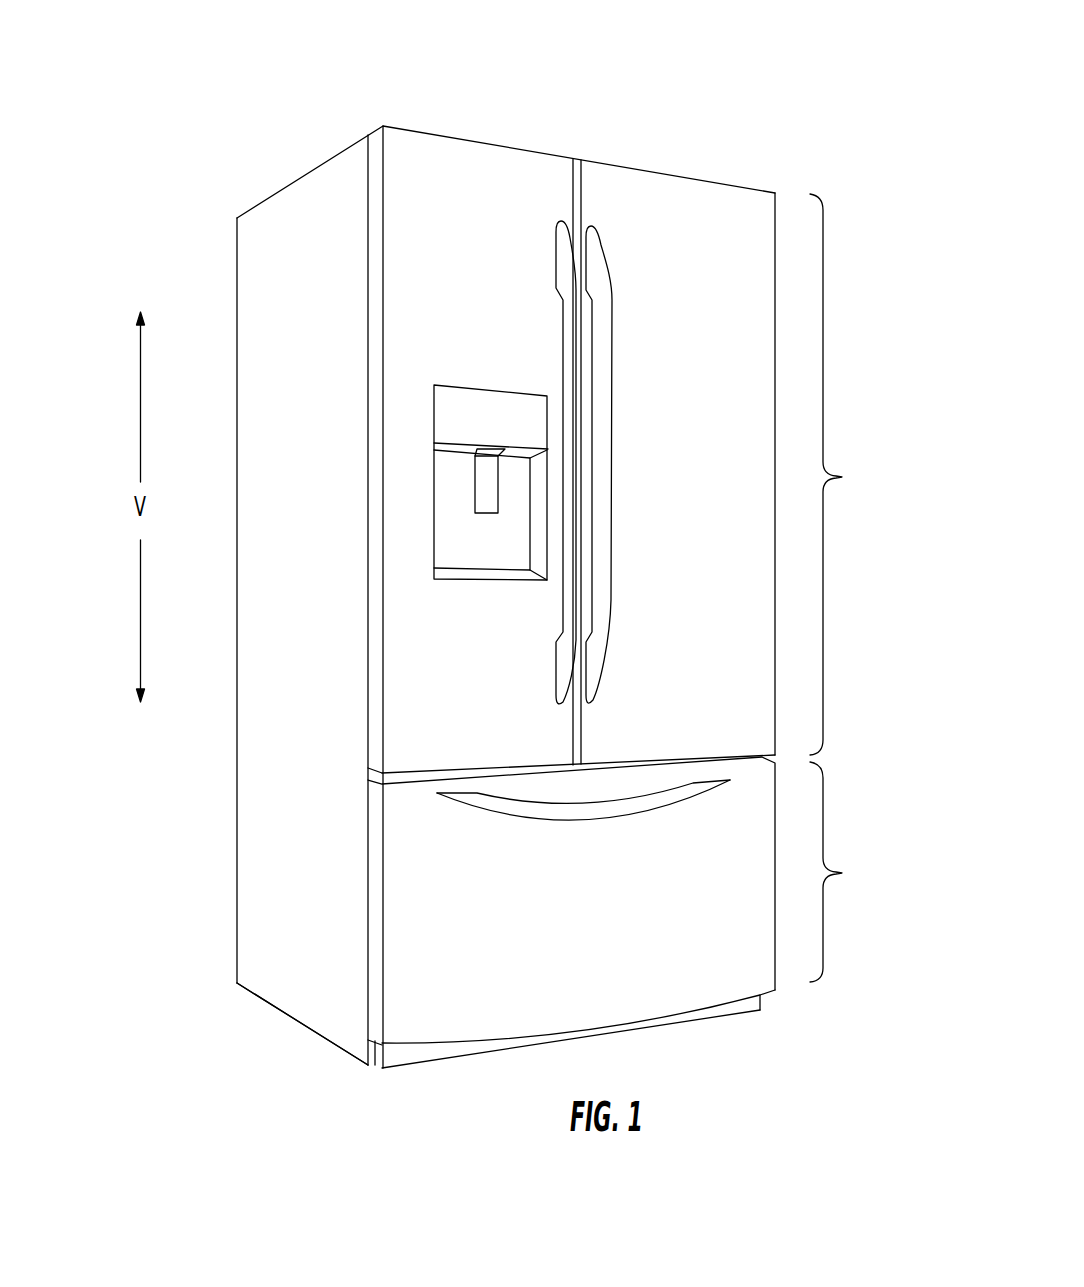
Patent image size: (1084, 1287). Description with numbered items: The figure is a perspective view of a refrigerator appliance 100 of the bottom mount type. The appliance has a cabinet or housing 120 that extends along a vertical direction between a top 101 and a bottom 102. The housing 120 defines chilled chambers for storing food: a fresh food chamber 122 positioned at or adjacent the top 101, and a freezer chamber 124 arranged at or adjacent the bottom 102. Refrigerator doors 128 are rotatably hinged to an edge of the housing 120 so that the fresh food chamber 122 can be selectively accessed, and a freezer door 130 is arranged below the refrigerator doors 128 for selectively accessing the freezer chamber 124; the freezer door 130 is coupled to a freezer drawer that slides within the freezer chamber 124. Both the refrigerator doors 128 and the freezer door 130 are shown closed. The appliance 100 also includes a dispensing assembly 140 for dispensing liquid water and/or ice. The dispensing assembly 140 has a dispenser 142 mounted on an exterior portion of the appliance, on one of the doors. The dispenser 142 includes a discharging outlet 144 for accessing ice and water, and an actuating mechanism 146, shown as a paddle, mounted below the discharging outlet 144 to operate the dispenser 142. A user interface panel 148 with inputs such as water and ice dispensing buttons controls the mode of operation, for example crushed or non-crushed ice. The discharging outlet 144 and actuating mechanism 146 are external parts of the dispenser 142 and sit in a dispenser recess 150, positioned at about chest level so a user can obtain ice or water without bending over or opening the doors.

The refrigerator appliance 100 is at (745, 120).
The top 101 is at (235, 218).
The bottom 102 is at (235, 980).
The housing 120 is at (323, 210).
The fresh food chamber 122 is at (846, 474).
The freezer chamber 124 is at (846, 872).
The refrigerator doors 128 is at (501, 255).
The freezer door 130 is at (612, 912).
The dispensing assembly 140 is at (467, 420).
The dispenser 142 is at (436, 531).
The discharging outlet 144 is at (480, 457).
The actuating mechanism 146 is at (485, 495).
The user interface panel 148 is at (509, 410).
The dispenser recess 150 is at (513, 545).